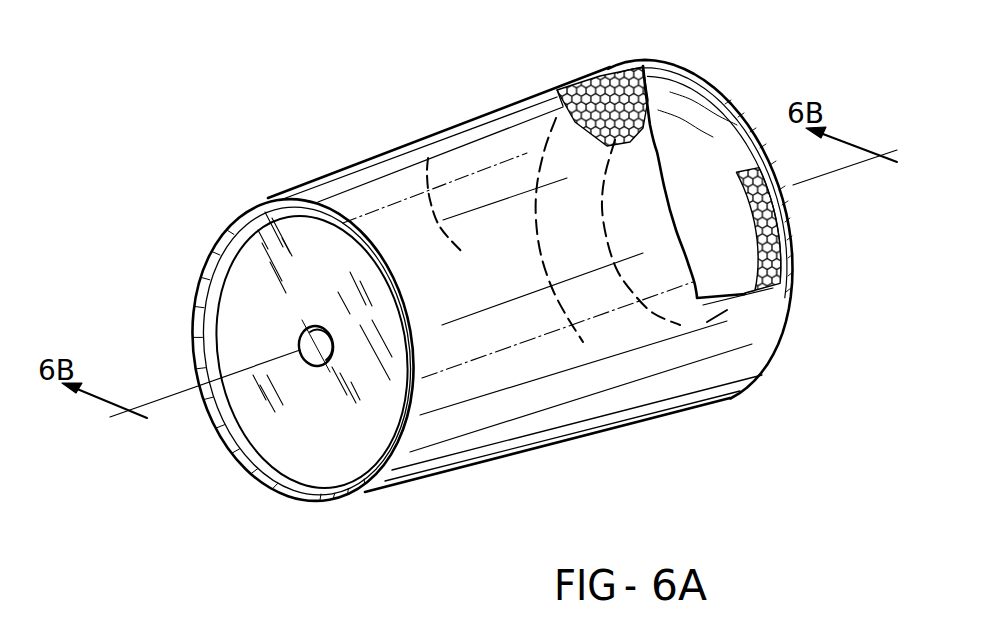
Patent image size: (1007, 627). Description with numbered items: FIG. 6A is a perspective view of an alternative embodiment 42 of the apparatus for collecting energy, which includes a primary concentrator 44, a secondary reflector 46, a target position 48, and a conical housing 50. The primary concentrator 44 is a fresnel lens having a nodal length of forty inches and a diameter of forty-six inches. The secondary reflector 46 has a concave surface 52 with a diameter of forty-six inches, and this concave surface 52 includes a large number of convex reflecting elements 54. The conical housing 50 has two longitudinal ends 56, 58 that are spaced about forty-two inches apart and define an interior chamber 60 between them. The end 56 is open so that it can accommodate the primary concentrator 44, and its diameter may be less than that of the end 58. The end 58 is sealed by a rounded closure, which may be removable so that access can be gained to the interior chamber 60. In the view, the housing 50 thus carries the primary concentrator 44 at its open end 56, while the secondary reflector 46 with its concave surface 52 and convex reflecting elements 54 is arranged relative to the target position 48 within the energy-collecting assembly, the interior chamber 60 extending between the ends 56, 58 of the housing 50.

The alternative embodiment 42 is at (178, 180).
The primary concentrator 44 is at (347, 467).
The secondary reflector 46 is at (643, 66).
The target position 48 is at (300, 350).
The conical housing 50 is at (377, 158).
The concave surface 52 is at (755, 257).
The convex reflecting elements 54 is at (651, 143).
The longitudinal end 56 is at (364, 496).
The longitudinal end 58 is at (793, 290).
The interior chamber 60 is at (428, 152).